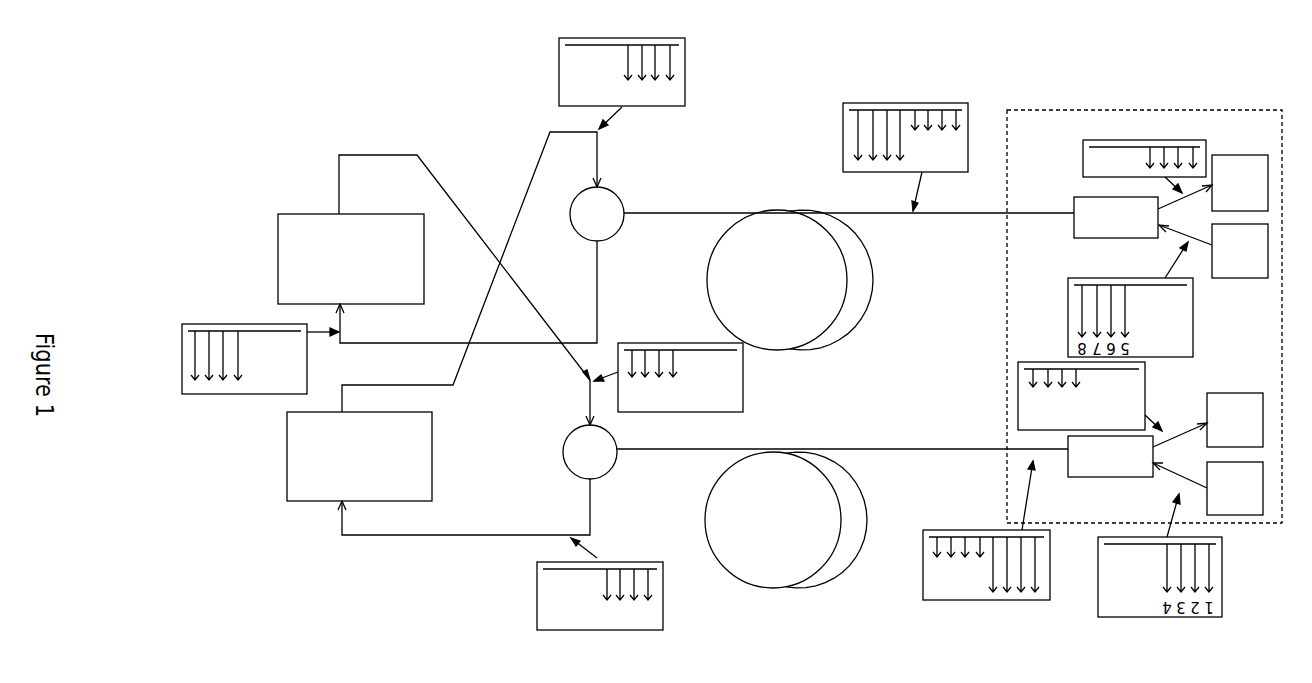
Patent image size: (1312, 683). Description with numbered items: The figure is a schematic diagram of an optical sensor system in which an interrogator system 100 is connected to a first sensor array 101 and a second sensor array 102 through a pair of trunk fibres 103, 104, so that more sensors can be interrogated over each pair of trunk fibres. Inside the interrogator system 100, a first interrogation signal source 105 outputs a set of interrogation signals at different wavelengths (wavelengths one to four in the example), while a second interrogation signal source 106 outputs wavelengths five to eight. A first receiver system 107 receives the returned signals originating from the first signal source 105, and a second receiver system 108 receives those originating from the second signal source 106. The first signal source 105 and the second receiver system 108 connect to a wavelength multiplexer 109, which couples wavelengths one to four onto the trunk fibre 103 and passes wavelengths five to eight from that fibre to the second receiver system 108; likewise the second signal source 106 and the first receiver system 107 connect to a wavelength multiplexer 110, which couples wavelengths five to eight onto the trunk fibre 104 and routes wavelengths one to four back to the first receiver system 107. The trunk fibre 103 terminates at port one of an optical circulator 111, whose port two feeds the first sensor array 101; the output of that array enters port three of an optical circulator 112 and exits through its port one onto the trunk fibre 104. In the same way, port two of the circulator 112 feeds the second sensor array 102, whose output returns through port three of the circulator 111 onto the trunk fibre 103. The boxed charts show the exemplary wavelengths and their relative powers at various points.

The interrogator system 100 is at (1144, 316).
The first sensor array 101 is at (359, 456).
The second sensor array 102 is at (351, 259).
The trunk fibre 103 is at (786, 520).
The trunk fibre 104 is at (790, 280).
The first interrogation signal source 105 is at (1235, 488).
The second interrogation signal source 106 is at (1240, 251).
The first receiver system 107 is at (1240, 183).
The second receiver system 108 is at (1235, 420).
The wavelength multiplexer 109 is at (1110, 456).
The wavelength multiplexer 110 is at (1116, 217).
The optical circulator 111 is at (595, 452).
The optical circulator 112 is at (601, 215).